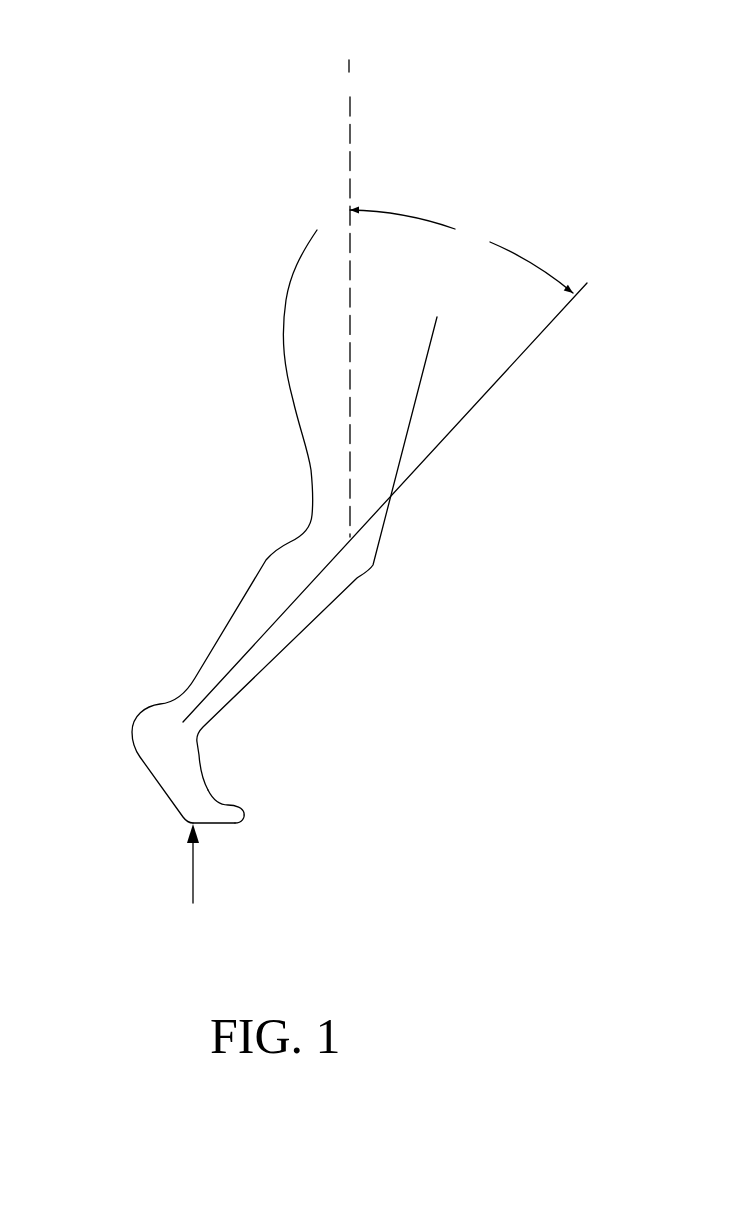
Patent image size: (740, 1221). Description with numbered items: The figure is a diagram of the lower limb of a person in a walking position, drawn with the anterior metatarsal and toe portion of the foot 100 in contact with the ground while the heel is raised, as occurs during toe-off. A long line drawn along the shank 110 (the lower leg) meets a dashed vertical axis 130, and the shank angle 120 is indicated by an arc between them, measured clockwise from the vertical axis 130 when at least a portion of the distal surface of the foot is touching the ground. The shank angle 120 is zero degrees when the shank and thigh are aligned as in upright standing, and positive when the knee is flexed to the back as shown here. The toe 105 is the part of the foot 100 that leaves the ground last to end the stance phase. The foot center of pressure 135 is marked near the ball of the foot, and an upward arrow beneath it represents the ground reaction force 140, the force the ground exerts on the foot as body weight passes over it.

The foot 100 is at (233, 555).
The toe 105 is at (259, 822).
The lower leg (shin) 110 is at (291, 673).
The shank angle 120 is at (489, 218).
The vertical axis 130 is at (349, 56).
The foot center of pressure 135 is at (214, 837).
The ground reaction force 140 is at (176, 890).